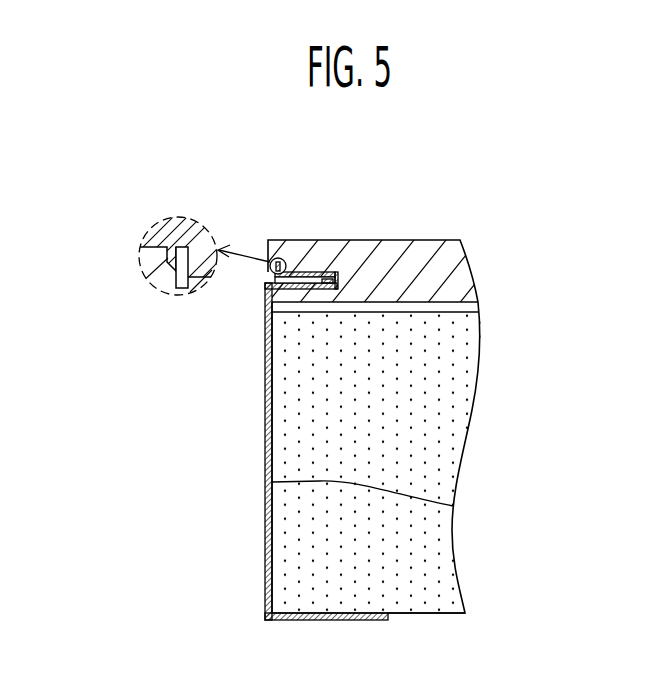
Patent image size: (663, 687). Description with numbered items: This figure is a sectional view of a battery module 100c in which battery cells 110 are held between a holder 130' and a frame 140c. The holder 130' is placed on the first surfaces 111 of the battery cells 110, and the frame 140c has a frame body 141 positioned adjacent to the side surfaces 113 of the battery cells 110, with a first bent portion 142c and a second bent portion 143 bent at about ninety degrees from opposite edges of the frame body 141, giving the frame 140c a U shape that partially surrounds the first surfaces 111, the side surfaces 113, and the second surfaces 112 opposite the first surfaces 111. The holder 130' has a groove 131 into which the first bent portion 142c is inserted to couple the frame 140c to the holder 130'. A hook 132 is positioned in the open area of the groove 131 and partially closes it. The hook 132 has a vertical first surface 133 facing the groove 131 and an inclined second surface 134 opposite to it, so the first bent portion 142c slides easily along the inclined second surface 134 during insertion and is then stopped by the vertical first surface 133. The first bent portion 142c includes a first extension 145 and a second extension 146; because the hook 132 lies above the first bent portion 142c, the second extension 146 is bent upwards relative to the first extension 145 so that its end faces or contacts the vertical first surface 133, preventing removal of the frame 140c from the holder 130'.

The battery module 100c is at (118, 141).
The battery cells 110 is at (459, 396).
The first surfaces 111 is at (446, 303).
The second surfaces 112 is at (427, 621).
The side surfaces 113 is at (453, 506).
The holder 130' is at (338, 225).
The groove 131 is at (331, 278).
The hook 132 is at (150, 253).
The first surface 133 is at (193, 247).
The second surface 134 is at (153, 268).
The frame 140c is at (238, 405).
The frame body 141 is at (265, 432).
The first bent portion 142c is at (264, 284).
The second bent portion 143 is at (305, 621).
The first extension 145 is at (277, 258).
The second extension 146 is at (300, 272).